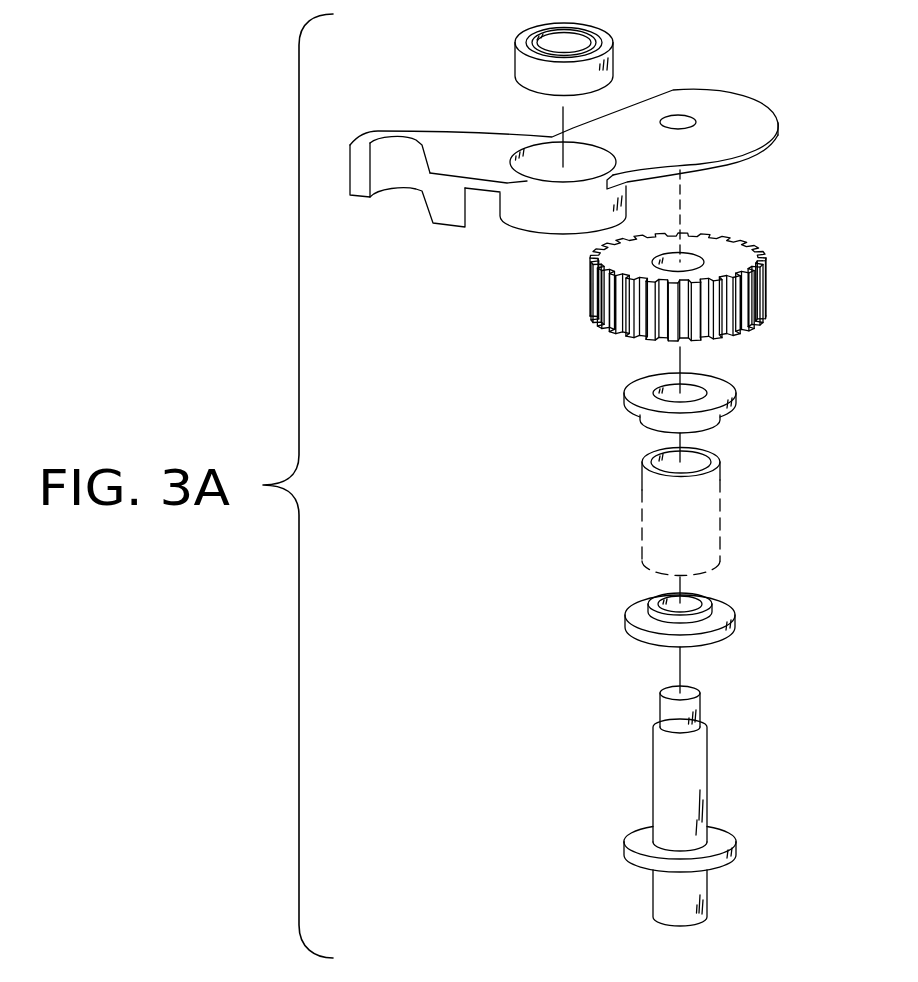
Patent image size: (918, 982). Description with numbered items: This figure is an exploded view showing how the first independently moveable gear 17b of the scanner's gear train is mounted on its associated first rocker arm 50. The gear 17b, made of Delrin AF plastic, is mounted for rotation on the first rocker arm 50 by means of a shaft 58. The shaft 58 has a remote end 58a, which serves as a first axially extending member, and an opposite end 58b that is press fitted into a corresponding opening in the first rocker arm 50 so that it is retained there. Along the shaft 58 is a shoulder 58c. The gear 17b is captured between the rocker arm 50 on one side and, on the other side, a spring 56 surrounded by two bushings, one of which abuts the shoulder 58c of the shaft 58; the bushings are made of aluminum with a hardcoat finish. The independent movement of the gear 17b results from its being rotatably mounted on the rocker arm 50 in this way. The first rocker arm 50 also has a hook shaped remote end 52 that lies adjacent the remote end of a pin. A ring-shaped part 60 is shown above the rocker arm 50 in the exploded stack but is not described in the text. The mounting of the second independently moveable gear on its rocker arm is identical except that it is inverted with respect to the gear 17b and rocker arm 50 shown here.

The first independently moveable gear 17b is at (590, 308).
The first rocker arm 50 is at (742, 93).
The hook shaped remote end 52 is at (402, 191).
The spring 56 is at (720, 520).
The shaft 58 is at (631, 802).
The remote end 58a is at (653, 893).
The end 58b is at (660, 710).
The shoulder 58c is at (625, 848).
The bearing 60 is at (514, 60).